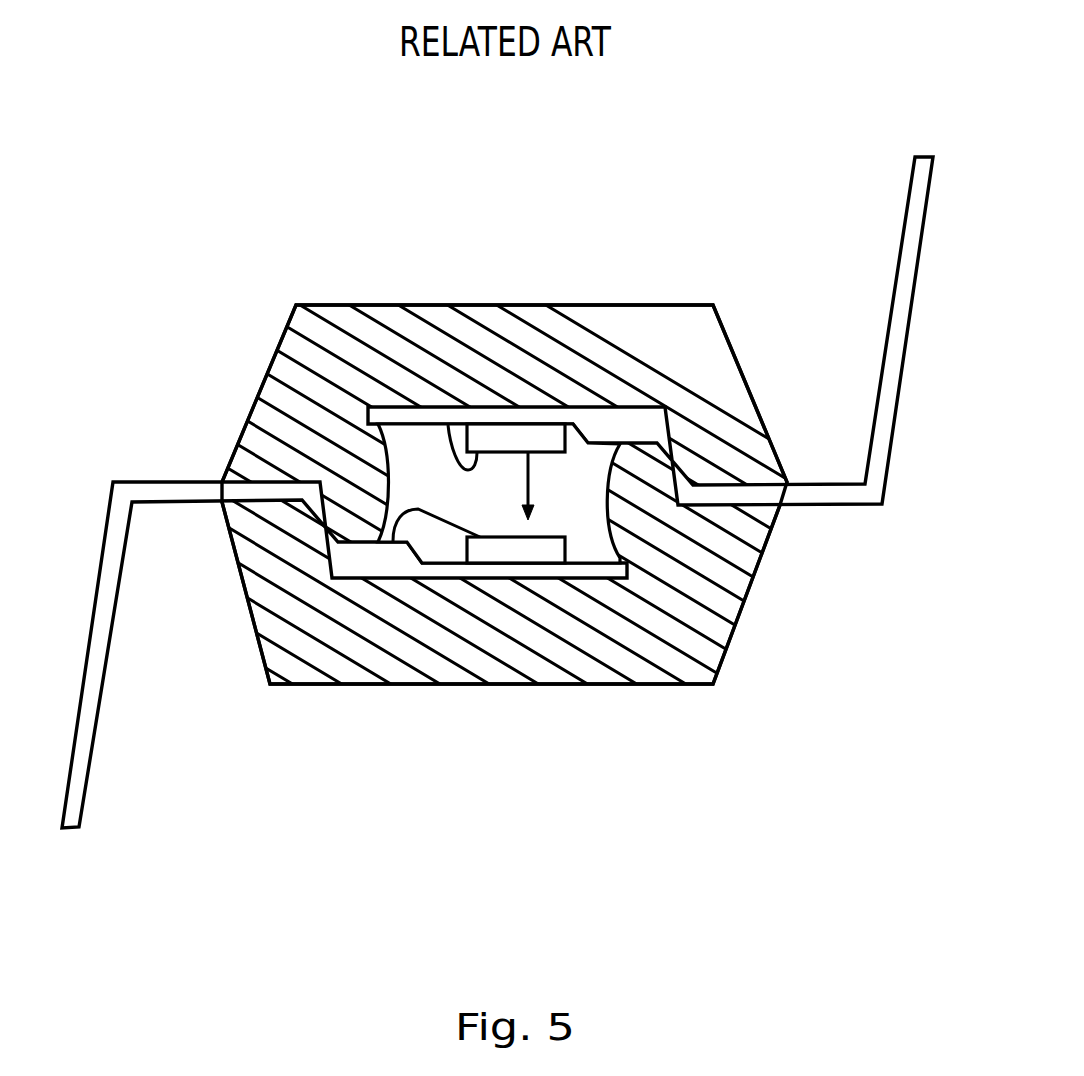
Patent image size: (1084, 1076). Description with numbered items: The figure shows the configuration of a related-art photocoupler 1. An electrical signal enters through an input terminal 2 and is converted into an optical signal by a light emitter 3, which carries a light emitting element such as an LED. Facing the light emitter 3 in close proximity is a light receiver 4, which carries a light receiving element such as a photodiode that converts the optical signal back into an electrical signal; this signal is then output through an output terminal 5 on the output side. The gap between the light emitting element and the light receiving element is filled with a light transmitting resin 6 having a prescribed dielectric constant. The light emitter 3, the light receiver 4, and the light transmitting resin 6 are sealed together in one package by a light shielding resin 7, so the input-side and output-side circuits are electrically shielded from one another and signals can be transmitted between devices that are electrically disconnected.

The photocoupler 1 is at (866, 786).
The input terminal 2 is at (903, 218).
The light emitter 3 is at (503, 424).
The light receiver 4 is at (485, 552).
The output terminal 5 is at (88, 800).
The light transmitting resin 6 is at (579, 552).
The light shielding resin 7 is at (717, 655).